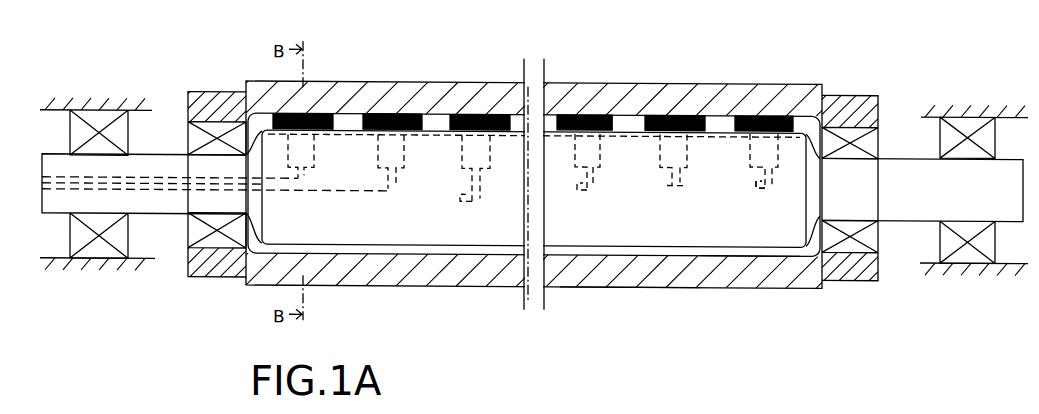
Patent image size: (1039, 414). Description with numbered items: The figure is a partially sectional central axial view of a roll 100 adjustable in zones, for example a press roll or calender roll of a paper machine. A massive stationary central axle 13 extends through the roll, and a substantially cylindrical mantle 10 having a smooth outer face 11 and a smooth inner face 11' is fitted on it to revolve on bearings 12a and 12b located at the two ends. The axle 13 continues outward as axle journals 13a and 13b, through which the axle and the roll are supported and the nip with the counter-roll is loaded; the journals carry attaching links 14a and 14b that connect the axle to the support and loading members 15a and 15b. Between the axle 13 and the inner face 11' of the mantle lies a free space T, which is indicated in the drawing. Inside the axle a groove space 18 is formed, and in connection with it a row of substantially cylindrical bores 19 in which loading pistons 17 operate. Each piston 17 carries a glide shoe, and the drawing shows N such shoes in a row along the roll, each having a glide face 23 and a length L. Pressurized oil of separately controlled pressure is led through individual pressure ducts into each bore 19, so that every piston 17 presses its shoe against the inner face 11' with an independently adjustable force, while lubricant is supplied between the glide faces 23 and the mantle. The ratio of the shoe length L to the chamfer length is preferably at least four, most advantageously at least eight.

The cylindrical mantle 10 is at (645, 277).
The outer face of the mantle 11 is at (630, 307).
The inner face of the mantle 11' is at (750, 292).
The bearing 12a is at (223, 242).
The bearing 12b is at (852, 242).
The central axle 13 is at (703, 236).
The axle journal 13a is at (172, 204).
The axle journal 13b is at (912, 203).
The attaching link 14a is at (112, 262).
The attaching link 14b is at (975, 262).
The support and loading member 15a is at (113, 104).
The support and loading member 15b is at (968, 104).
The loading piston 17 is at (465, 140).
The groove space 18 is at (567, 110).
The cylindrical bore 19 is at (487, 158).
The glide face 23 is at (394, 108).
The length of the shoe L is at (600, 109).
The free space T is at (580, 257).
The roll adjustable in zones 100 is at (485, 231).